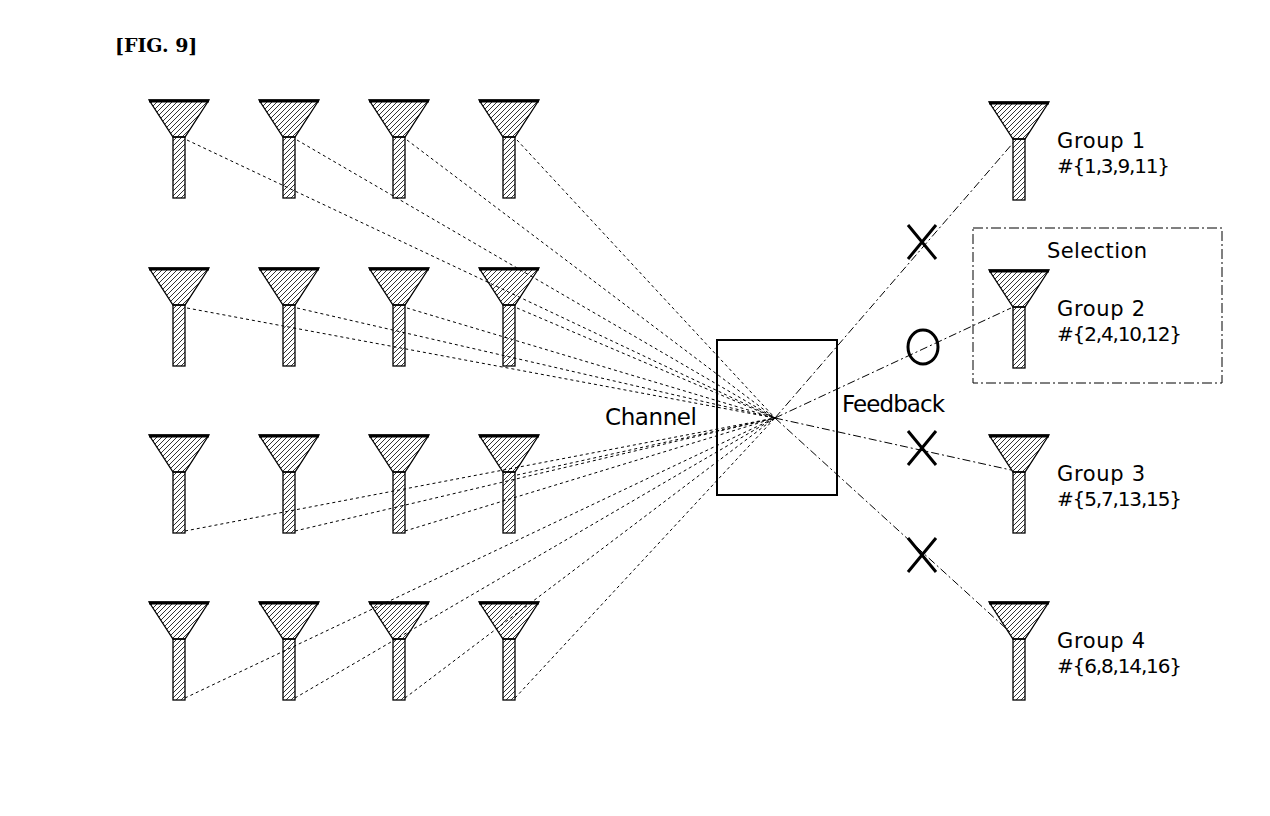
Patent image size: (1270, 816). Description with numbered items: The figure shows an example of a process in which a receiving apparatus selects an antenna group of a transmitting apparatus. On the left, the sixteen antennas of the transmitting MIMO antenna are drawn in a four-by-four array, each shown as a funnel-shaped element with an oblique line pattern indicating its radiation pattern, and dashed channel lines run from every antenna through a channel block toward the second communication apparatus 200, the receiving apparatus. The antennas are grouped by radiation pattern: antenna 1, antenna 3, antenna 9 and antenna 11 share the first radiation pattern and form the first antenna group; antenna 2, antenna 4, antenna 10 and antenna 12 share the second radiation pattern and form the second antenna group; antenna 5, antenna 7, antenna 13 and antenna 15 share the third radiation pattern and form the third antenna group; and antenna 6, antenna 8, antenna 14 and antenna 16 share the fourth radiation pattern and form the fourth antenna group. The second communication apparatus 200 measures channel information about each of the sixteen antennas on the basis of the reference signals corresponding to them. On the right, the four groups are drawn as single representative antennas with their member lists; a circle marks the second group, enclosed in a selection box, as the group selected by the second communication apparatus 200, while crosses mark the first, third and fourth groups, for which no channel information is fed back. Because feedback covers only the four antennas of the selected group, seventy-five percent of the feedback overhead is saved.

The second communication apparatus 200 is at (776, 340).
The antenna # 1 is at (179, 166).
The antenna # 2 is at (289, 166).
The antenna # 3 is at (399, 166).
The antenna # 4 is at (509, 166).
The antenna # 5 is at (179, 334).
The antenna # 6 is at (289, 334).
The antenna # 7 is at (399, 334).
The antenna # 8 is at (509, 334).
The antenna # 9 is at (179, 501).
The antenna # 10 is at (289, 501).
The antenna # 11 is at (399, 501).
The antenna # 12 is at (509, 501).
The antenna # 13 is at (179, 668).
The antenna # 14 is at (289, 668).
The antenna # 15 is at (399, 668).
The antenna # 16 is at (509, 668).